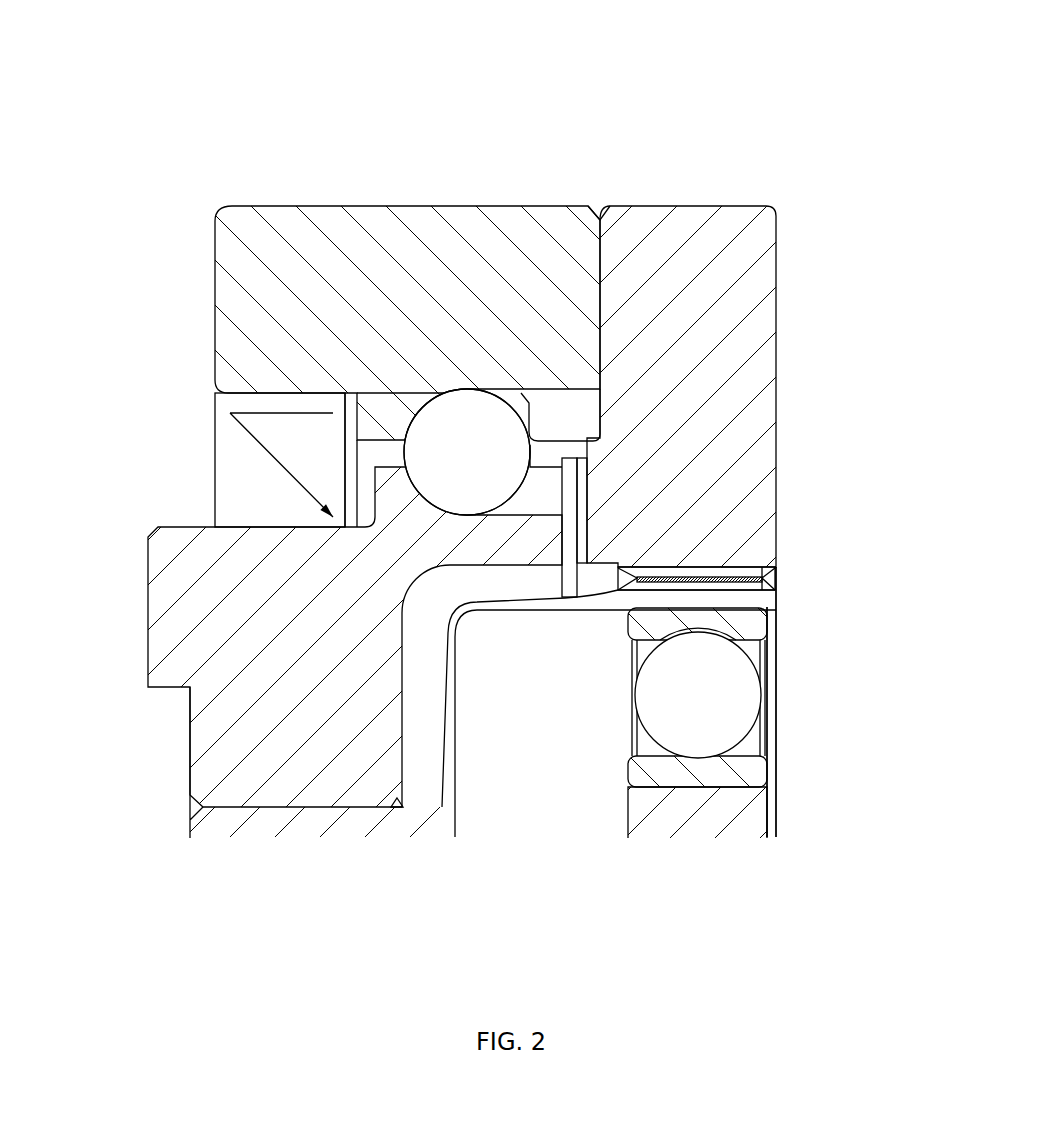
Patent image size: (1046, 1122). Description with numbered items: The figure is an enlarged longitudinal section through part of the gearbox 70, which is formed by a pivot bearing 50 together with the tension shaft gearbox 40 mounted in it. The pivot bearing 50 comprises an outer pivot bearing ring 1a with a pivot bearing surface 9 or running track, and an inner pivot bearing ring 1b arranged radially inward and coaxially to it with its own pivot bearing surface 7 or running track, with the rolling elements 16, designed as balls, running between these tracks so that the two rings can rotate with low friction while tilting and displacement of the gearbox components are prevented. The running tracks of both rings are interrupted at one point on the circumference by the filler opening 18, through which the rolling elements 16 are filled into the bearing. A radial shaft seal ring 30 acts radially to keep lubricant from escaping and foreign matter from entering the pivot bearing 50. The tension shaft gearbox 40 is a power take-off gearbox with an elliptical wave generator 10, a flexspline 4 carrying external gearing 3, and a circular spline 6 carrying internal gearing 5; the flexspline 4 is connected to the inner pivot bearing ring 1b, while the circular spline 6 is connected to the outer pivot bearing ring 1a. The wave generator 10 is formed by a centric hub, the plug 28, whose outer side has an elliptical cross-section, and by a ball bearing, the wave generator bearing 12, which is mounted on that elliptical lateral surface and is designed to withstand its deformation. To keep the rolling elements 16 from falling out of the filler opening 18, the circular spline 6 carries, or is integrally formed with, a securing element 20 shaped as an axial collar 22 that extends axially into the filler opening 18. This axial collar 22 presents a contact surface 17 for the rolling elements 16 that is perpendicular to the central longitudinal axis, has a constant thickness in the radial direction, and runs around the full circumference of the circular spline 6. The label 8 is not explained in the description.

The outer pivot bearing ring 1a is at (552, 238).
The inner pivot bearing ring 1b is at (366, 756).
The external gearing 3 is at (742, 585).
The flexspline 4 is at (208, 832).
The internal gearing 5 is at (712, 572).
The circular spline 6 is at (752, 500).
The pivot bearing surface 7 is at (468, 517).
The rolling element of second bearing 8 is at (697, 695).
The pivot bearing surface 9 is at (469, 388).
The elliptical wave generator 10 is at (803, 760).
The wave generator bearing 12 is at (771, 702).
The rolling elements 16 is at (450, 443).
The contact surface 17 is at (548, 451).
The filler opening 18 is at (570, 423).
The securing element 20 is at (580, 458).
The axial collar 22 is at (582, 510).
The plug 28 is at (697, 827).
The radial shaft seal ring 30 is at (262, 491).
The tension shaft gearbox 40 is at (756, 521).
The pivot bearing 50 is at (331, 256).
The gearbox 70 is at (595, 195).